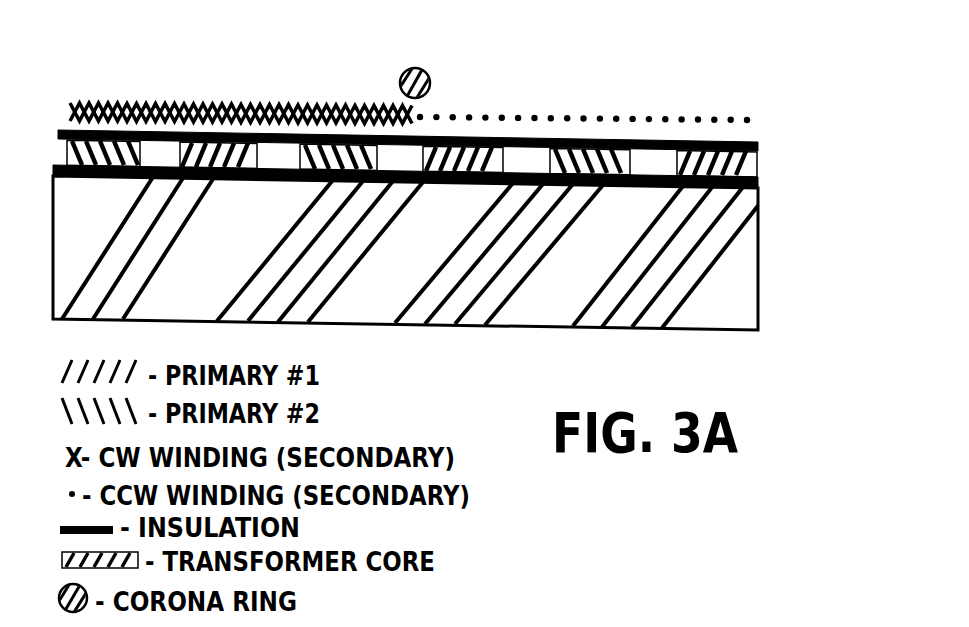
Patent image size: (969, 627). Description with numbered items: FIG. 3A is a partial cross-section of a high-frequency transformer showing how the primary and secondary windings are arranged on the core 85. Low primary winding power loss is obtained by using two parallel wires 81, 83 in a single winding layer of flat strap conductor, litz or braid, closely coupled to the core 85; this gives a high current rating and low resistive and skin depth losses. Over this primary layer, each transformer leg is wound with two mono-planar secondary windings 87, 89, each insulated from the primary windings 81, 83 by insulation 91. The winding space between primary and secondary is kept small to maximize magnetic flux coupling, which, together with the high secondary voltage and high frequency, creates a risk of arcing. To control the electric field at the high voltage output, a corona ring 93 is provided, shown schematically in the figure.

The primary winding 81 is at (618, 138).
The primary winding 83 is at (760, 172).
The core 85 is at (745, 282).
The secondary winding 87 is at (217, 103).
The secondary winding 89 is at (505, 112).
The insulation 91 is at (760, 140).
The corona ring 93 is at (424, 70).